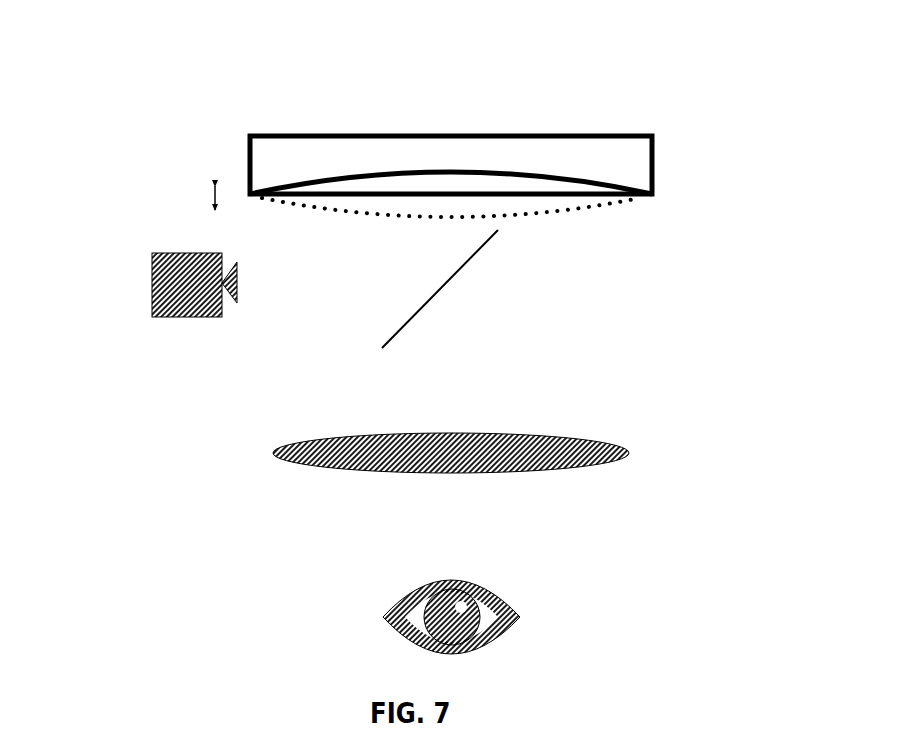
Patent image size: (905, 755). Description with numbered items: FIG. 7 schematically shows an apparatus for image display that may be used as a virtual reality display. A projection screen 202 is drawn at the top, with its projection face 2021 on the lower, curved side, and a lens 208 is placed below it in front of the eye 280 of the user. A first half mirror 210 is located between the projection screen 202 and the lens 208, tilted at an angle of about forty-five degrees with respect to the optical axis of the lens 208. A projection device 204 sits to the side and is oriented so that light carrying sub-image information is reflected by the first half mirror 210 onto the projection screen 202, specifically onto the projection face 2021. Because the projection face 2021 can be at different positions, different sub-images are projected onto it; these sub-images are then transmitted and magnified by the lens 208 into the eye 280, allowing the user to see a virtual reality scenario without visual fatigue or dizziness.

The projection screen 202 is at (290, 133).
The projection face 2021 is at (565, 186).
The projection device 204 is at (132, 313).
The lens 208 is at (238, 448).
The first half mirror 210 is at (485, 278).
The eye 280 is at (530, 608).